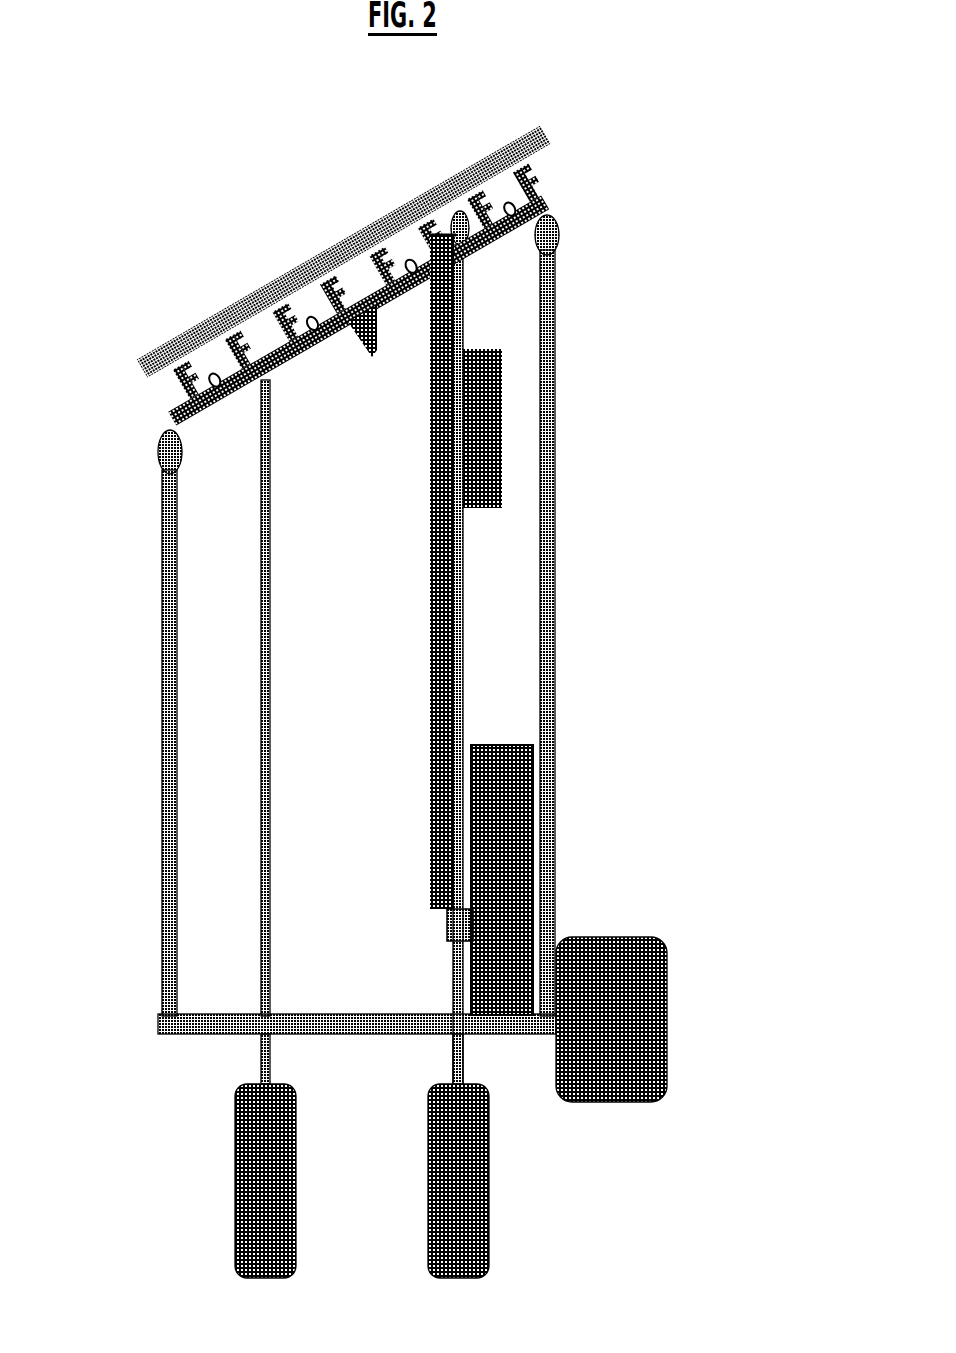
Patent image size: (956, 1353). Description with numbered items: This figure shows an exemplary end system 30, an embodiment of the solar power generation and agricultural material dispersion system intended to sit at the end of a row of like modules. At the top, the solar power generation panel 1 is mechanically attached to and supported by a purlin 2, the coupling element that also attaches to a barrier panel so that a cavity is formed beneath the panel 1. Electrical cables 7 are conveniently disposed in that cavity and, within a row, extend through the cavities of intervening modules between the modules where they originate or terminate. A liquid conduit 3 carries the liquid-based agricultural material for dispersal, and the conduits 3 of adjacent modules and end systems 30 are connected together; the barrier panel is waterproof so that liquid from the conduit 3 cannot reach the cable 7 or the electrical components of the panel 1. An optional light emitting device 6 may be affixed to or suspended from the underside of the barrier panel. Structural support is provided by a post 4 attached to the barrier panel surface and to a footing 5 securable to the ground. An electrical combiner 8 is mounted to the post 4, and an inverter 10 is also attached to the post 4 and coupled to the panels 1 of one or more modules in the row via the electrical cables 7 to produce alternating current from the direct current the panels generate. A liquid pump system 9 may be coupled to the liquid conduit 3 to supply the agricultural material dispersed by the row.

The solar power generation panel 1 is at (197, 330).
The purlin 2 is at (185, 390).
The liquid conduit 3 is at (158, 478).
The post 4 is at (263, 760).
The footing 5 is at (235, 1177).
The light emitting device 6 is at (372, 362).
The electrical cable 7 is at (455, 570).
The electrical combiner 8 is at (502, 428).
The liquid pump system 9 is at (611, 934).
The inverter 10 is at (532, 878).
The end system 30 is at (617, 1201).